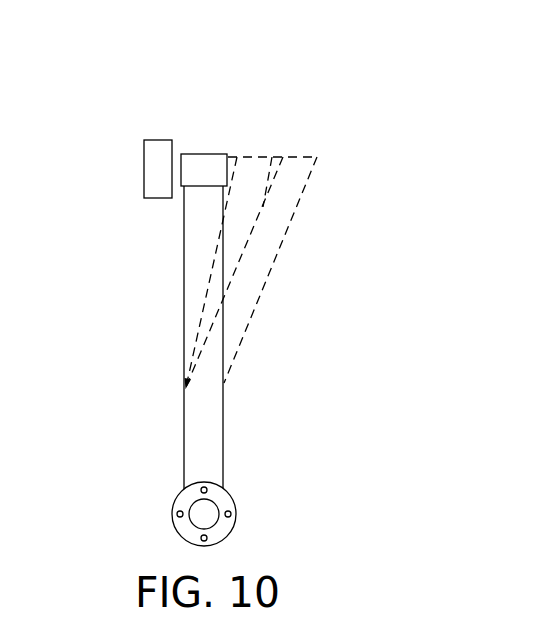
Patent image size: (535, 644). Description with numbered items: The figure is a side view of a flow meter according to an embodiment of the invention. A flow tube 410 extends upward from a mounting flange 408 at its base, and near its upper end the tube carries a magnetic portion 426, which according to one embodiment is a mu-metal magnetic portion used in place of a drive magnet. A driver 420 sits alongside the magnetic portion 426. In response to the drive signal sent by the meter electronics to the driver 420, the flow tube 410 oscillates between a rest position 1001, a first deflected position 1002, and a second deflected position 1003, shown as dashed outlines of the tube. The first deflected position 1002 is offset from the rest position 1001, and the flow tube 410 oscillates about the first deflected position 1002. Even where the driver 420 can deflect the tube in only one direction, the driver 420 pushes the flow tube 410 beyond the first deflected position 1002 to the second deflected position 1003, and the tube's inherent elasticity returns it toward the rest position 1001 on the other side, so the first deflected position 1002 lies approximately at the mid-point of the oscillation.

The mounting base 408 is at (235, 497).
The flow tube 410 is at (184, 298).
The driver 420 is at (144, 157).
The magnetic portion 426 is at (195, 153).
The rest position 1001 is at (206, 152).
The first deflected position 1002 is at (259, 156).
The second deflected position 1003 is at (317, 156).